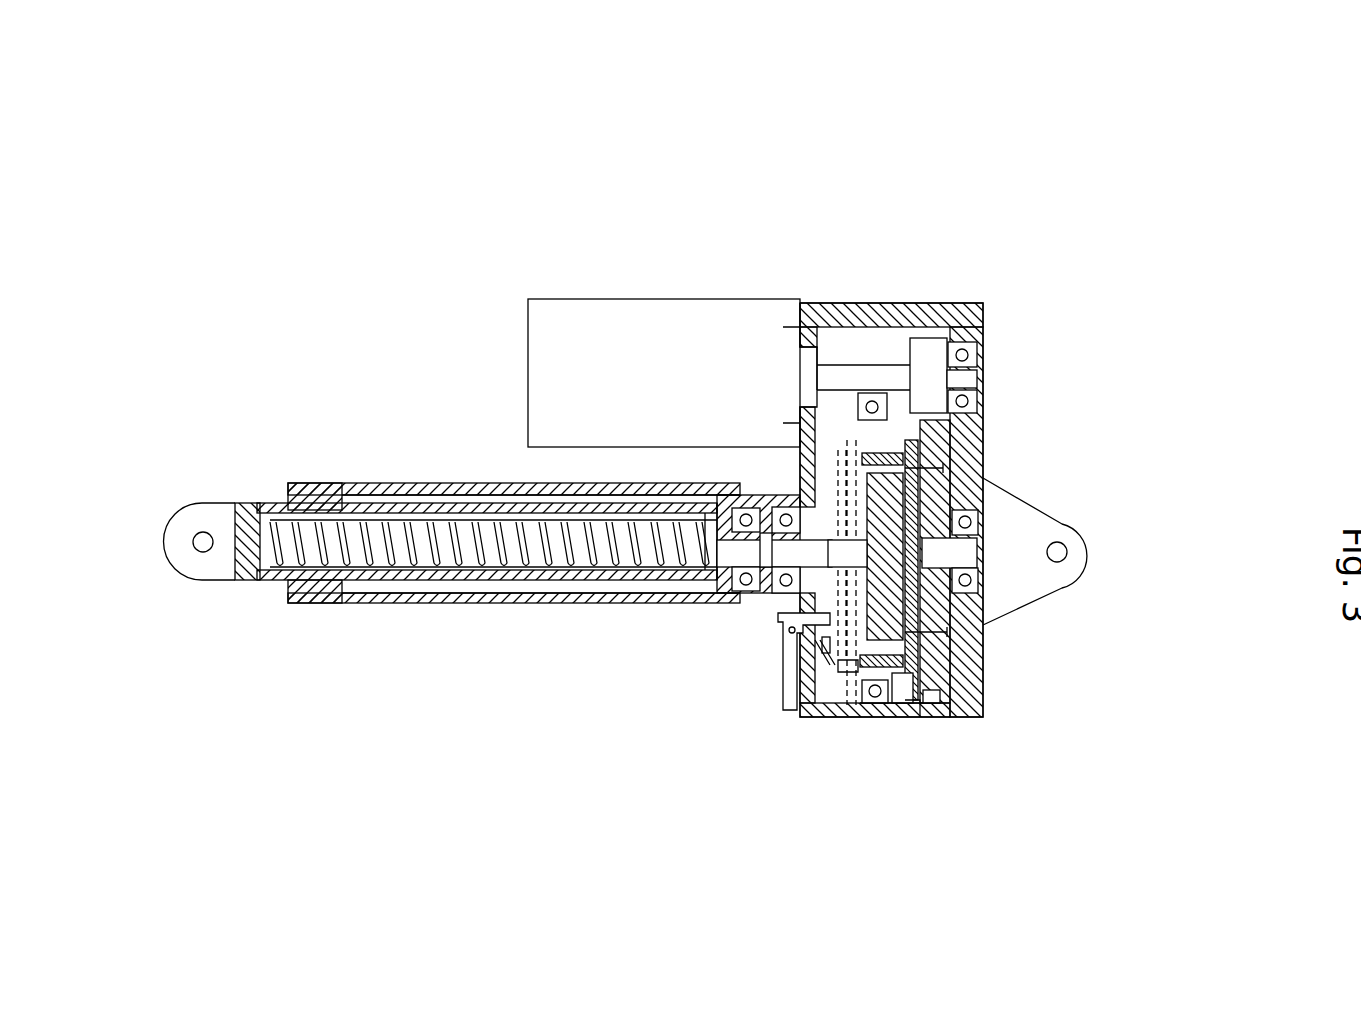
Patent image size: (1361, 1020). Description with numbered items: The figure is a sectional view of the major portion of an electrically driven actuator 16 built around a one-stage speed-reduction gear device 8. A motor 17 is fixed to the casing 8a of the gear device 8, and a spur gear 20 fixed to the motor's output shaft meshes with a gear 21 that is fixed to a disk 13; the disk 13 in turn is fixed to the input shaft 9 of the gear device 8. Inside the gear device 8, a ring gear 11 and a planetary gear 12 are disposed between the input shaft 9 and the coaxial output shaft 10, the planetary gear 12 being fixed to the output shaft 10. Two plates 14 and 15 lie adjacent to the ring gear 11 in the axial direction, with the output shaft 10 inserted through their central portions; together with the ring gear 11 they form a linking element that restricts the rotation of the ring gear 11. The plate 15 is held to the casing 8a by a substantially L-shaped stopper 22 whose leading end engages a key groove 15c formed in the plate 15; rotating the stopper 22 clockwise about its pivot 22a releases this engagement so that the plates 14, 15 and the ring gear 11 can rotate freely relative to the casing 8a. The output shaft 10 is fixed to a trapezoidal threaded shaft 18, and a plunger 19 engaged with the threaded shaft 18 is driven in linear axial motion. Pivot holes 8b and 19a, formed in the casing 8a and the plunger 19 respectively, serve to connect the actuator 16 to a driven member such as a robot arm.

The gear device 8 is at (977, 496).
The casing 8a is at (850, 316).
The pivot hole 8b is at (1057, 545).
The input shaft 9 is at (960, 555).
The output shaft 10 is at (780, 610).
The ring gear 11 is at (900, 717).
The planetary gear 12 is at (880, 605).
The disk 13 is at (917, 717).
The plate 14 is at (847, 717).
The plate 15 is at (756, 749).
The key groove 15c is at (825, 665).
The electrically driven actuator 16 is at (537, 233).
The motor 17 is at (690, 321).
The threaded shaft 18 is at (527, 563).
The plunger 19 is at (176, 610).
The pivot hole 19a is at (203, 548).
The gear 20 is at (928, 343).
The gear 21 is at (913, 662).
The stopper 22 is at (757, 699).
The pivot 22a is at (783, 630).